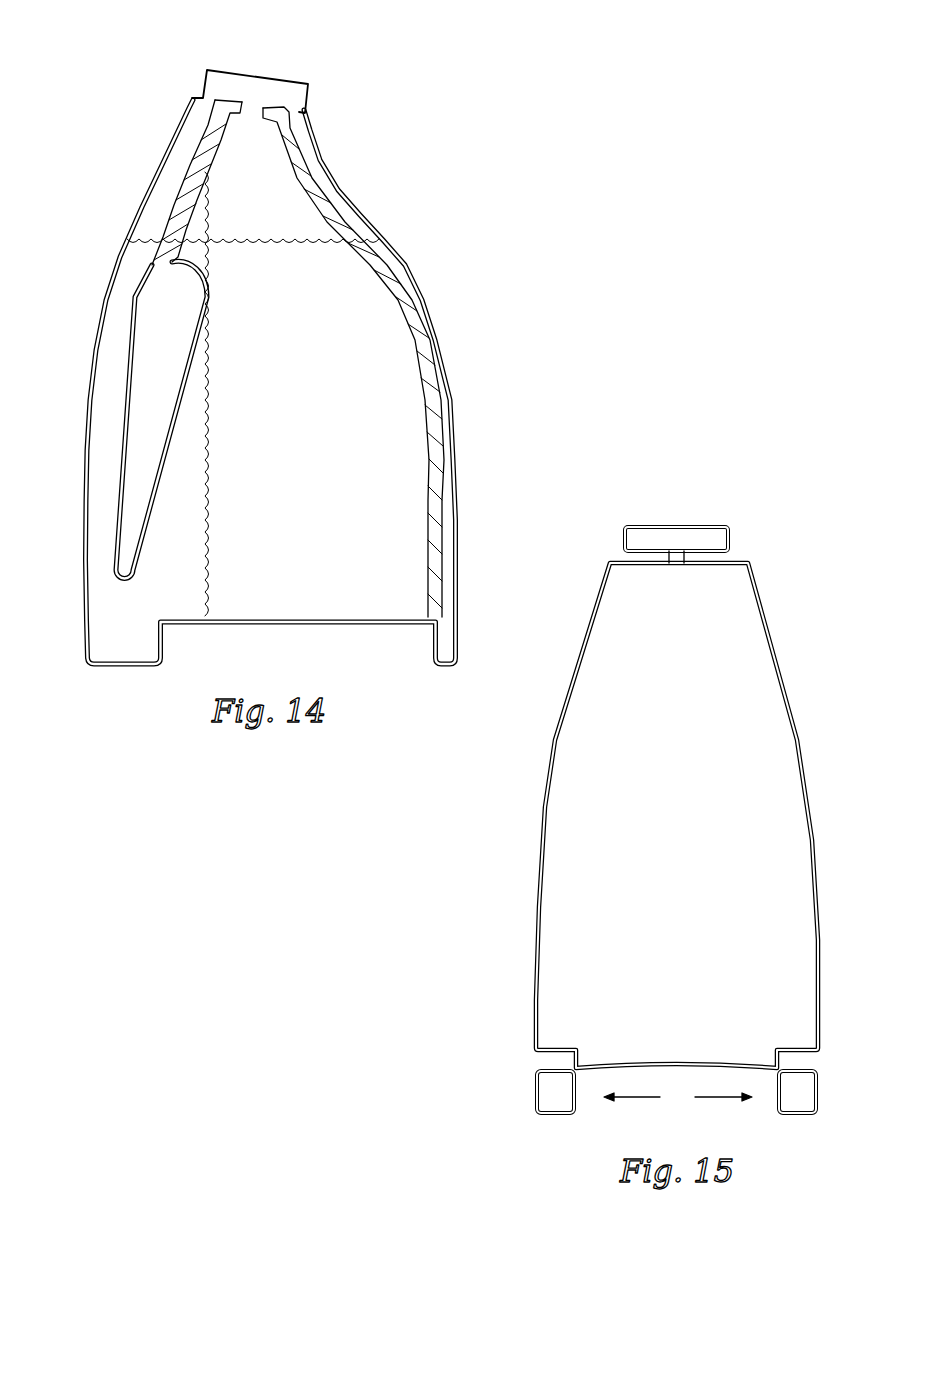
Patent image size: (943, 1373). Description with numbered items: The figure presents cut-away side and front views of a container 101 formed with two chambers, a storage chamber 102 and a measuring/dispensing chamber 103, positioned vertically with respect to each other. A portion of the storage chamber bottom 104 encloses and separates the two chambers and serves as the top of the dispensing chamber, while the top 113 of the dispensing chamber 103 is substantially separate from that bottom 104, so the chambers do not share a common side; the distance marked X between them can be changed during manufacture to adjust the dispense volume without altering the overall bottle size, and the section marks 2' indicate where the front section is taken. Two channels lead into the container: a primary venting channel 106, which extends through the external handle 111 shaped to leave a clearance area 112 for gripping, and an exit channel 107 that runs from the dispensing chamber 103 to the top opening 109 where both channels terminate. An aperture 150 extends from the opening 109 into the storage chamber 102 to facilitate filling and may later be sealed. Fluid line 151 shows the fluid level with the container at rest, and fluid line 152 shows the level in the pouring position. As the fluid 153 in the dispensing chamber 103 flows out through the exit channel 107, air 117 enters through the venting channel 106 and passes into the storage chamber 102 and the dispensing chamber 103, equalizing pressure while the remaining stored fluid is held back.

In FIG. 14, the container 101 is at (300, 336).
In FIG. 15, the container 101 is at (639, 802).
In FIG. 14, the storage chamber 102 is at (340, 282).
In FIG. 15, the storage chamber 102 is at (733, 727).
In FIG. 15, the measuring/dispensing chamber 103 is at (553, 1088).
In FIG. 15, the storage chamber bottom 104 is at (690, 1066).
In FIG. 14, the primary venting channel 106 is at (162, 197).
In FIG. 14, the exit channel 107 is at (445, 398).
In FIG. 14, the top opening 109 is at (238, 68).
In FIG. 15, the top opening 109 is at (673, 522).
In FIG. 14, the container handle 111 is at (97, 358).
In FIG. 14, the clearance area 112 is at (152, 410).
In FIG. 15, the top of dispensing chamber 113 is at (548, 1068).
In FIG. 14, the air 117 is at (222, 62).
In FIG. 14, the aperture 150 is at (255, 102).
In FIG. 14, the fluid line 151 is at (300, 238).
In FIG. 14, the fluid line 152 is at (203, 577).
In FIG. 14, the fluid 153 is at (292, 108).
In FIG. 15, the section line 2' is at (661, 1028).